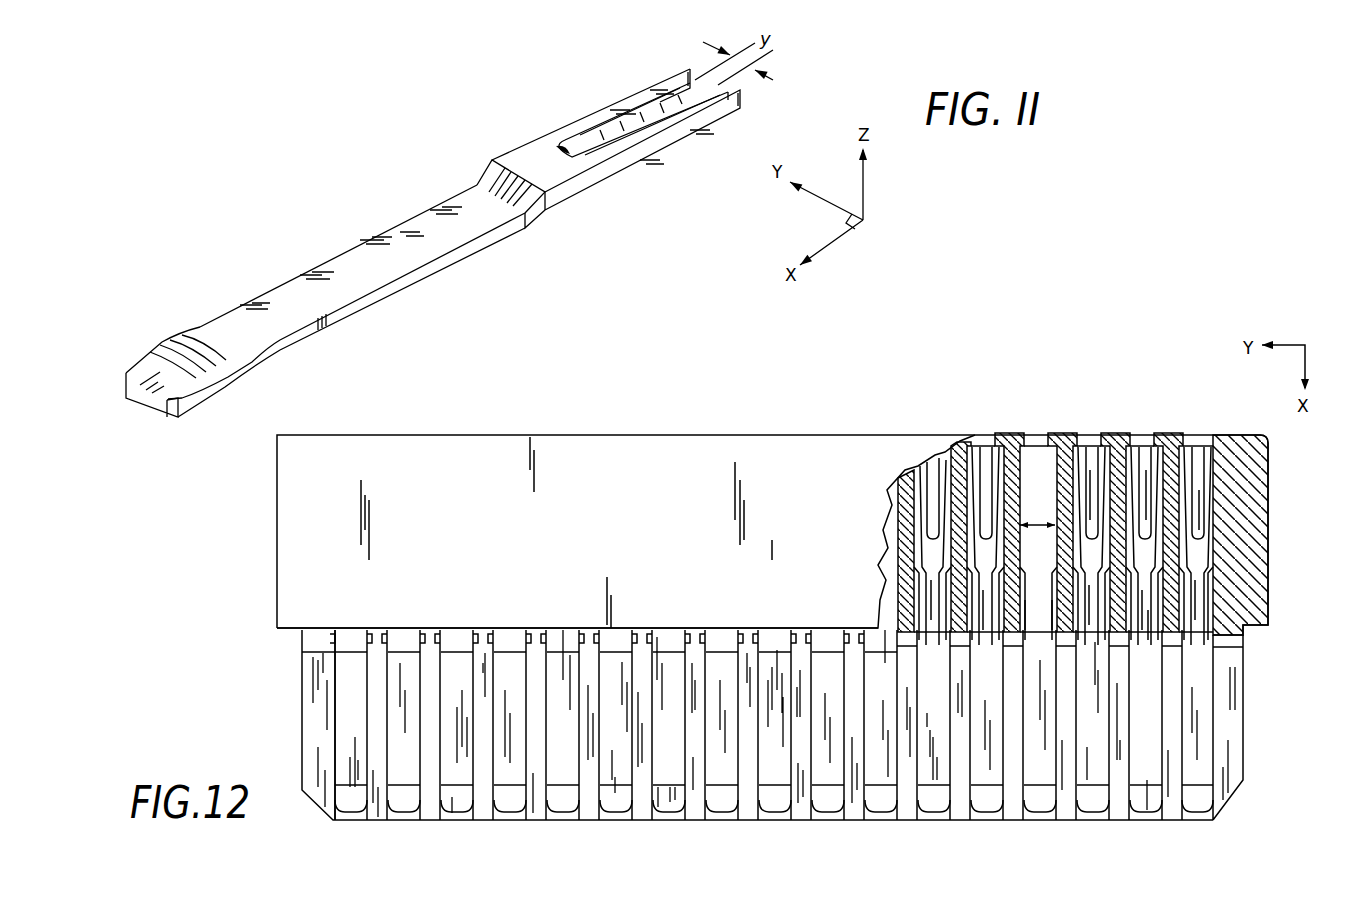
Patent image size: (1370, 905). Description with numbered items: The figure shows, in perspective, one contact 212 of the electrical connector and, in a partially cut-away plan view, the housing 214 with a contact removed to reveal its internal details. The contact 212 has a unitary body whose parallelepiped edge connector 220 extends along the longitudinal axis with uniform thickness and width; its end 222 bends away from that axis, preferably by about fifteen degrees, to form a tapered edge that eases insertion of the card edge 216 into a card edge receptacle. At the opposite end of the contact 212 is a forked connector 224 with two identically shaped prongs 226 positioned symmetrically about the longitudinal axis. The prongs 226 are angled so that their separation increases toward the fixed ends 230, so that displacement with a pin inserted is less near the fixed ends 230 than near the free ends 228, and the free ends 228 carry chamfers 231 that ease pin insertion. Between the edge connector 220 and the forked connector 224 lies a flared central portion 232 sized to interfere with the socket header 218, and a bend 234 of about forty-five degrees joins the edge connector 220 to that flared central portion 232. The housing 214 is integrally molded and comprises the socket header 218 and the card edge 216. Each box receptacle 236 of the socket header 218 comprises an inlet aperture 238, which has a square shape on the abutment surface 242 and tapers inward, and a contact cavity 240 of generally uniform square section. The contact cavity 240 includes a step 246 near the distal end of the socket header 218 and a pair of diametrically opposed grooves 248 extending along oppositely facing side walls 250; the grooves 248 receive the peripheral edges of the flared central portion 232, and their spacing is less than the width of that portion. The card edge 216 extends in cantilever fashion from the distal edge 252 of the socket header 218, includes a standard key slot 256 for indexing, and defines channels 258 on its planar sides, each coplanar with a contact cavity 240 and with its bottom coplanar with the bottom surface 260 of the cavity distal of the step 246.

In FIG. 11, the contact 212 is at (285, 240).
In FIG. 12, the housing 214 is at (645, 415).
In FIG. 12, the housing card edge 216 is at (318, 727).
In FIG. 12, the socket header 218 is at (300, 517).
In FIG. 11, the parallelepiped edge connector 220 is at (340, 297).
In FIG. 11, the end of the edge connector 222 is at (200, 393).
In FIG. 11, the forked connector 224 is at (578, 232).
In FIG. 11, the prongs 226 is at (605, 105).
In FIG. 11, the free ends of the prongs 228 is at (675, 74).
In FIG. 11, the fixed ends of the prongs 230 is at (568, 130).
In FIG. 11, the chamfers 231 is at (693, 72).
In FIG. 11, the flared central portion 232 is at (508, 172).
In FIG. 11, the bend 234 is at (529, 232).
In FIG. 12, the box receptacle 236 is at (1278, 433).
In FIG. 12, the inlet aperture 238 is at (1198, 432).
In FIG. 12, the contact cavity 240 is at (1047, 490).
In FIG. 12, the abutment surface 242 is at (1246, 432).
In FIG. 12, the step 246 is at (1022, 582).
In FIG. 12, the grooves 248 is at (1053, 632).
In FIG. 12, the side walls 250 is at (1025, 432).
In FIG. 12, the distal edge of the socket header 252 is at (292, 629).
In FIG. 12, the key slot 256 is at (432, 790).
In FIG. 12, the channels 258 is at (1040, 818).
In FIG. 12, the bottom surface of the contact cavity 260 is at (1037, 607).